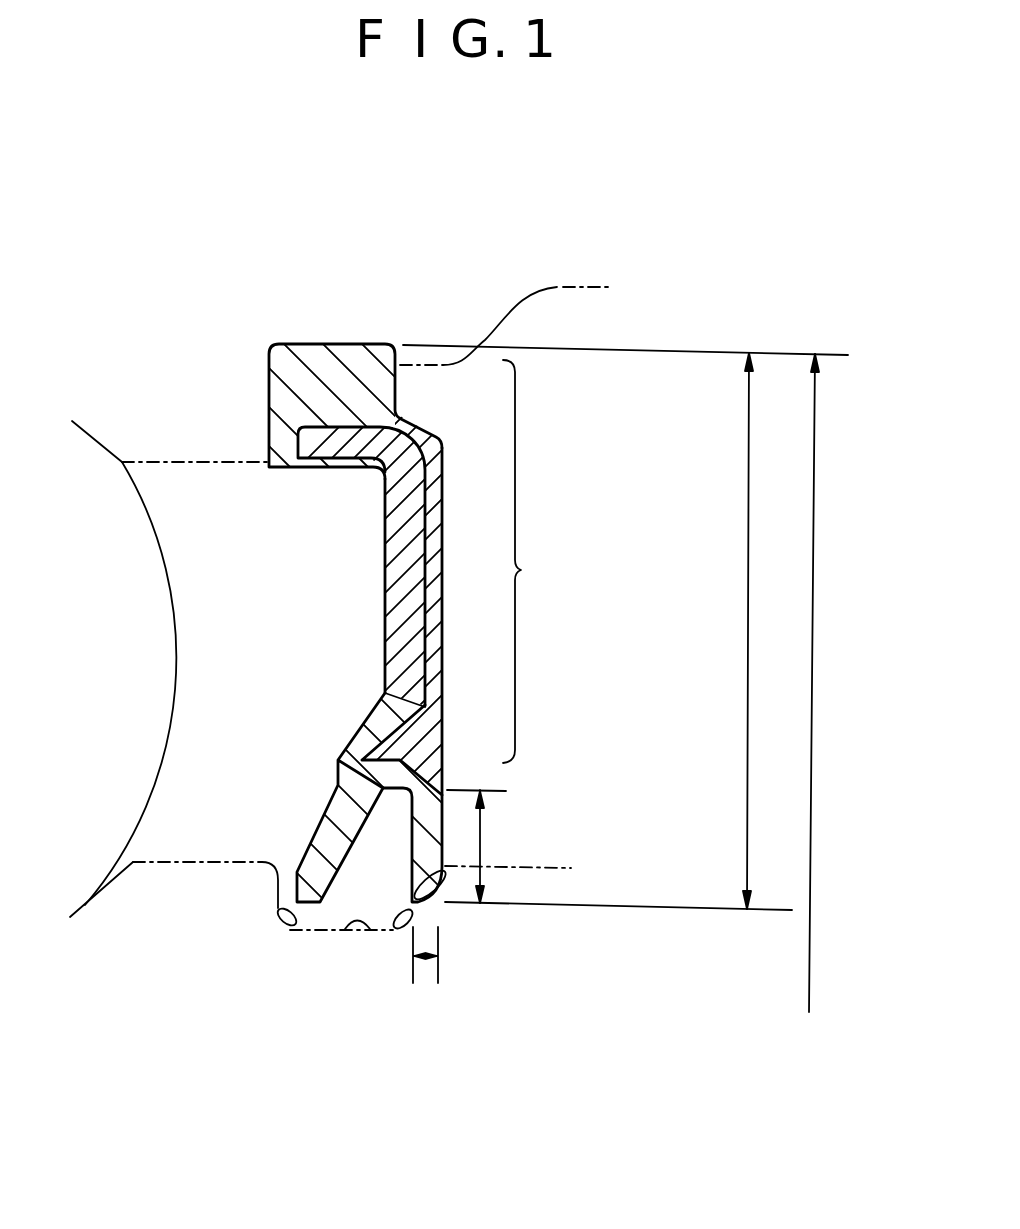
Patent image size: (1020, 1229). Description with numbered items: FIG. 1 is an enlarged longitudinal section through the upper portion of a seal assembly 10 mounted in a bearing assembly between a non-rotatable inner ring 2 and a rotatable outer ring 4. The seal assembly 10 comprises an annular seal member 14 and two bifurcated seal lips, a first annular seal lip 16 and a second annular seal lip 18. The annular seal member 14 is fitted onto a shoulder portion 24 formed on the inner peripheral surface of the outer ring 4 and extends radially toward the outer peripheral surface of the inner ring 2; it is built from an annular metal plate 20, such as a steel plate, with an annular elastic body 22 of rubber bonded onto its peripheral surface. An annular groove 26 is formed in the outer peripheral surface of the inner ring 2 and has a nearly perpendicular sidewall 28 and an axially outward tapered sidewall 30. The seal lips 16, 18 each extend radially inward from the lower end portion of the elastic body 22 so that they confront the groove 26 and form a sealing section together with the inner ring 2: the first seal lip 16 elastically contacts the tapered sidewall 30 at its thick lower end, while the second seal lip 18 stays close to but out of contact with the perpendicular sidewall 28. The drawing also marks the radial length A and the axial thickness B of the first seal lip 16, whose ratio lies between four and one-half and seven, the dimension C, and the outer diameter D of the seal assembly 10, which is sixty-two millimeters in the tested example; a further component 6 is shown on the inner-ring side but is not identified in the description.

The inner ring 2 is at (571, 868).
The outer ring 4 is at (527, 303).
The shaft shoulder member 6 is at (185, 717).
The seal assembly 10 is at (556, 626).
The annular seal member 14 is at (534, 561).
The first annular seal lip 16 is at (422, 837).
The second annular seal lip 18 is at (323, 813).
The annular metal plate 20 is at (387, 577).
The annular elastic body 22 is at (432, 560).
The shoulder portion 24 is at (303, 349).
The annular groove 26 is at (353, 927).
The perpendicular sidewall 28 is at (287, 928).
The tapered sidewall 30 is at (390, 930).
The radial length A is at (481, 846).
The axial thickness B is at (425, 979).
The basic load rating C is at (760, 631).
The outer diameter D is at (828, 683).